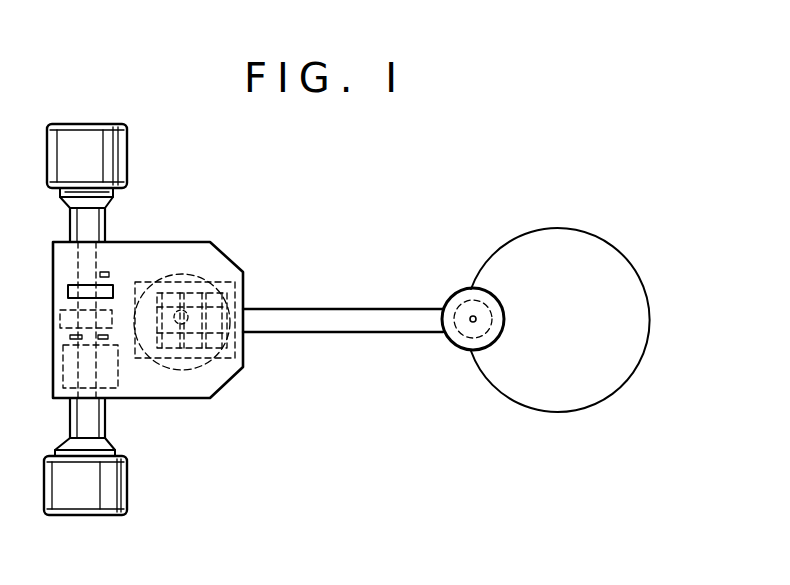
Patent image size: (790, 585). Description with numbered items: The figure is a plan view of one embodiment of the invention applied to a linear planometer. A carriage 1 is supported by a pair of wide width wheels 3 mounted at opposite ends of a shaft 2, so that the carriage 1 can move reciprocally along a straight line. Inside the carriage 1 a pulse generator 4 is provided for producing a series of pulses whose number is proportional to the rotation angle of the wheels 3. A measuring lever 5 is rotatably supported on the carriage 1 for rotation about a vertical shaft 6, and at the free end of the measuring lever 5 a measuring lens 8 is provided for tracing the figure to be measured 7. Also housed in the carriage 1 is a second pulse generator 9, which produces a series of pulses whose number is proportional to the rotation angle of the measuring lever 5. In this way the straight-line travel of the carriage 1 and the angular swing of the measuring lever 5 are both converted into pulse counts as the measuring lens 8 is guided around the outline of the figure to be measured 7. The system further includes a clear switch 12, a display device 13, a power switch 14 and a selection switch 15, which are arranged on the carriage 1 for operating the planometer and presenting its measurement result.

The carriage 1 is at (186, 242).
The shaft 2 is at (108, 213).
The wide width wheels 3 is at (120, 152).
The pulse generator 4 is at (60, 319).
The measuring lever 5 is at (352, 309).
The vertical shaft 6 is at (170, 362).
The figure to be measured 7 is at (515, 397).
The measuring lens 8 is at (461, 291).
The pulse generator 9 is at (200, 362).
The clear switch 12 is at (105, 340).
The display device 13 is at (70, 292).
The power switch 14 is at (72, 339).
The selection switch 15 is at (100, 272).